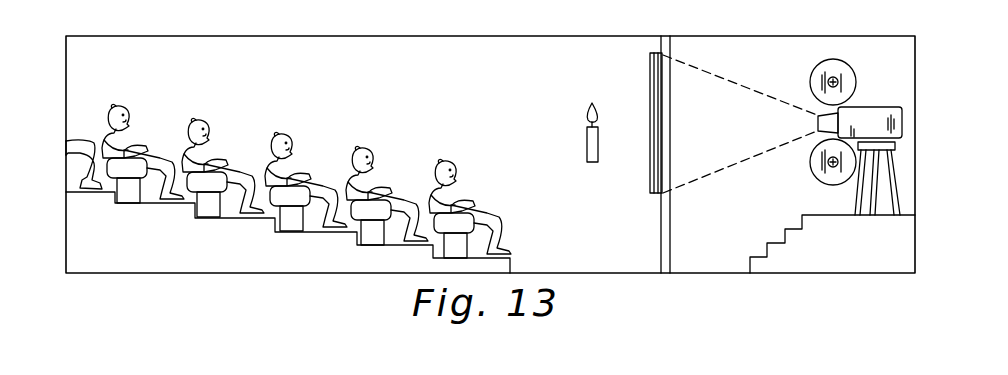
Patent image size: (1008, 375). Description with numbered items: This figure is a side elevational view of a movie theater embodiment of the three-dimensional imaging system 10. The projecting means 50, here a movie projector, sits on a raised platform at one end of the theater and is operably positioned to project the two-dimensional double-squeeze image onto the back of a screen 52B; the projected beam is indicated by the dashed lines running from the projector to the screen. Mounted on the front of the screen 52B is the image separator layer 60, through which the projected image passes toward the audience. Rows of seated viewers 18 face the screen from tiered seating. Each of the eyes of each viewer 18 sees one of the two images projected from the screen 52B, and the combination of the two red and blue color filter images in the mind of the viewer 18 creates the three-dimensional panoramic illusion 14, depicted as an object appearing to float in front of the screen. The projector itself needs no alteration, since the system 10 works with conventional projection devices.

The 3-D imaging system 10 is at (897, 68).
The viewer 18 is at (192, 128).
The 3-D panoramic illusion 14 is at (586, 134).
The image separator layer 60 is at (650, 110).
The screen 52B is at (667, 70).
The projecting means 50 is at (865, 107).